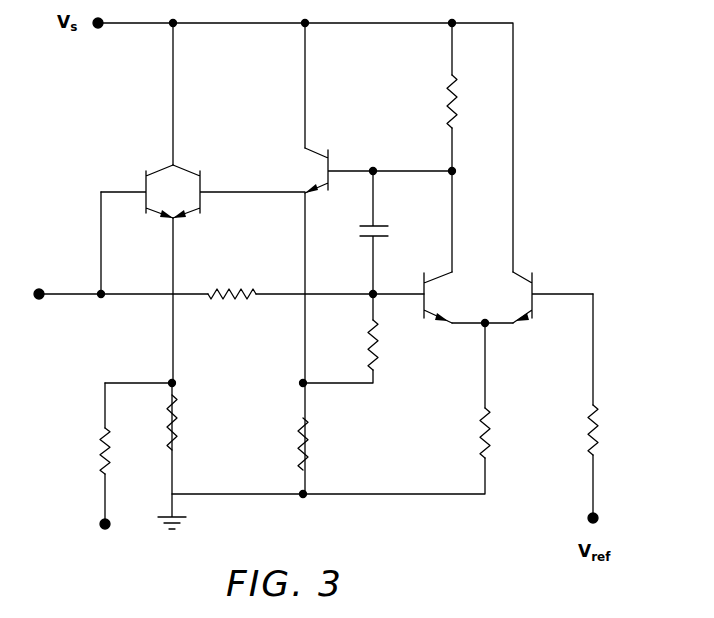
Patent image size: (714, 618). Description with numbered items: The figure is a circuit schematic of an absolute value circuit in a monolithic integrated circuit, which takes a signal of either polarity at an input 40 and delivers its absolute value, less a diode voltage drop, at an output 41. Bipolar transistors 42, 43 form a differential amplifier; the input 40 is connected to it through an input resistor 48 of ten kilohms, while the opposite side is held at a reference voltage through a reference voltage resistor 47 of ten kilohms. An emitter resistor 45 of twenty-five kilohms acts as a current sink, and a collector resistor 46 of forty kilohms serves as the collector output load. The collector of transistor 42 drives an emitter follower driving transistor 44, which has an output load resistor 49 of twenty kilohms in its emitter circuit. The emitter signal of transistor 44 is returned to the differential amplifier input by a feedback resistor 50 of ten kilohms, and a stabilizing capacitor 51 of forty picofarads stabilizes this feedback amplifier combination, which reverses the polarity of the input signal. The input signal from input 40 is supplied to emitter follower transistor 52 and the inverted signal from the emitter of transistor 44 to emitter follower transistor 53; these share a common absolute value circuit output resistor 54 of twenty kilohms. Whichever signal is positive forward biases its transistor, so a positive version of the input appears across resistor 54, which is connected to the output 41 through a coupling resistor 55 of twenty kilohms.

The input 40 is at (39, 294).
The output 41 is at (103, 523).
The bipolar transistor 42 is at (432, 290).
The bipolar transistor 43 is at (532, 300).
The emitter follower driving transistor 44 is at (328, 172).
The emitter resistor 45 is at (490, 430).
The collector resistor 46 is at (447, 102).
The reference voltage resistor 47 is at (598, 427).
The input resistor 48 is at (229, 292).
The output load resistor 49 is at (308, 440).
The feedback resistor 50 is at (378, 346).
The stabilizing capacitor 51 is at (378, 229).
The emitter follower transistor 52 is at (146, 183).
The emitter follower transistor 53 is at (200, 183).
The absolute value circuit output resistor 54 is at (177, 434).
The coupling resistor 55 is at (100, 455).